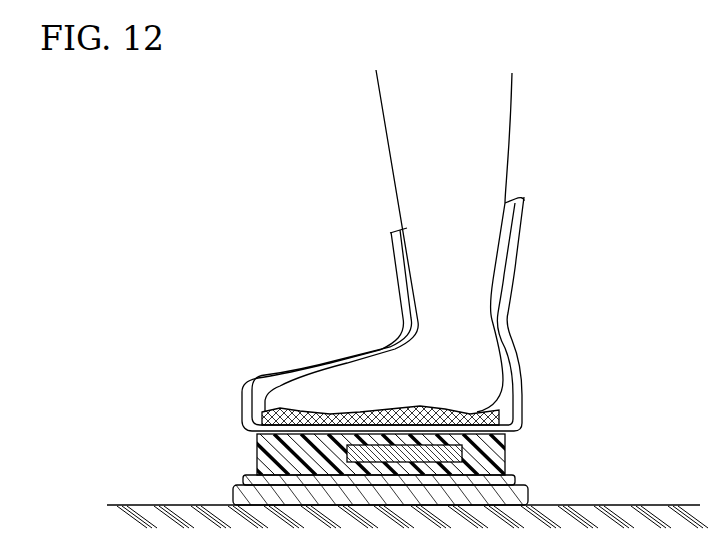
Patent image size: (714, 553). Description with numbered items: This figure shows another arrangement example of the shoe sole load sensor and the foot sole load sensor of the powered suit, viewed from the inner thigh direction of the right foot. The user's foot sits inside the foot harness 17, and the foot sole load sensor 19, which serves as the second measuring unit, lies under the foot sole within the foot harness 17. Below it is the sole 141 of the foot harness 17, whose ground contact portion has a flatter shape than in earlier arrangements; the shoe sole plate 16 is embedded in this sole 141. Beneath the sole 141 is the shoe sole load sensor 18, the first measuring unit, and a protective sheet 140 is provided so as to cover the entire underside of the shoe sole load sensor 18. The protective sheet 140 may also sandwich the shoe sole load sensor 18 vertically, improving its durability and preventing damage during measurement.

The foot harness 17 is at (392, 248).
The foot sole load sensor 19 is at (320, 412).
The sole 141 is at (258, 452).
The shoe sole plate 16 is at (462, 452).
The shoe sole load sensor 18 is at (245, 477).
The protective sheet 140 is at (233, 497).